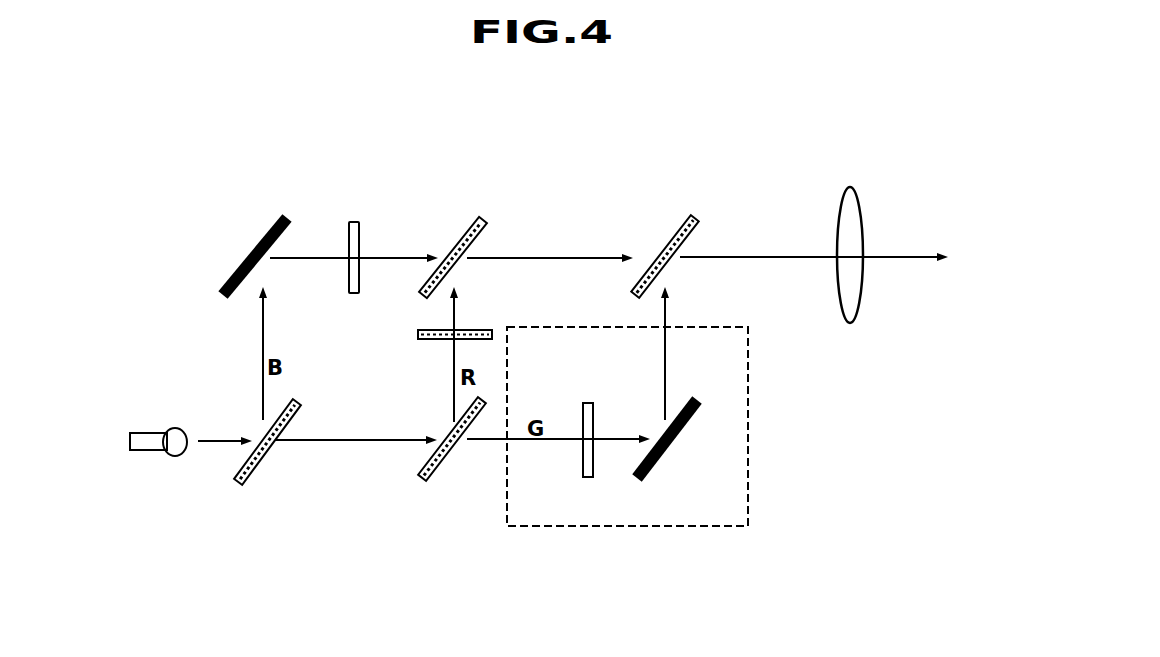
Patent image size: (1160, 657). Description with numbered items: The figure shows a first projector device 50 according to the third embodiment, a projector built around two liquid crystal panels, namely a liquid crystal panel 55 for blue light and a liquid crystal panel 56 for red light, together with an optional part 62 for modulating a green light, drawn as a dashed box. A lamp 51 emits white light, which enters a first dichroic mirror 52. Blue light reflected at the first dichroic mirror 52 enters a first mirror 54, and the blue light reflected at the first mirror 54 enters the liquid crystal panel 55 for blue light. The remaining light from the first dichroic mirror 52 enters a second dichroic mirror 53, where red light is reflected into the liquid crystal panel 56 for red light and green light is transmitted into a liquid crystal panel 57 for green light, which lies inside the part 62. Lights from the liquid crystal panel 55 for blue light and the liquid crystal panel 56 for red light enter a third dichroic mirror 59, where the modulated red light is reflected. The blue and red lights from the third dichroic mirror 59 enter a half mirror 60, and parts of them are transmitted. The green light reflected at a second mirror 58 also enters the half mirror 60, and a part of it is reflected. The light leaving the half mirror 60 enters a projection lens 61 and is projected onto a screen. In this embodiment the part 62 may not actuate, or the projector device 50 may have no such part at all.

The first projector device 50 is at (823, 437).
The lamp 51 is at (172, 432).
The first dichroic mirror 52 is at (258, 462).
The second dichroic mirror 53 is at (445, 461).
The first mirror 54 is at (258, 249).
The liquid crystal panel for blue light 55 is at (354, 222).
The liquid crystal panel for red light 56 is at (418, 334).
The liquid crystal panel for green light 57 is at (588, 403).
The second mirror 58 is at (676, 445).
The third dichroic mirror 59 is at (460, 234).
The half mirror 60 is at (674, 235).
The projection lens 61 is at (850, 188).
The part for modulating a green light 62 is at (658, 527).